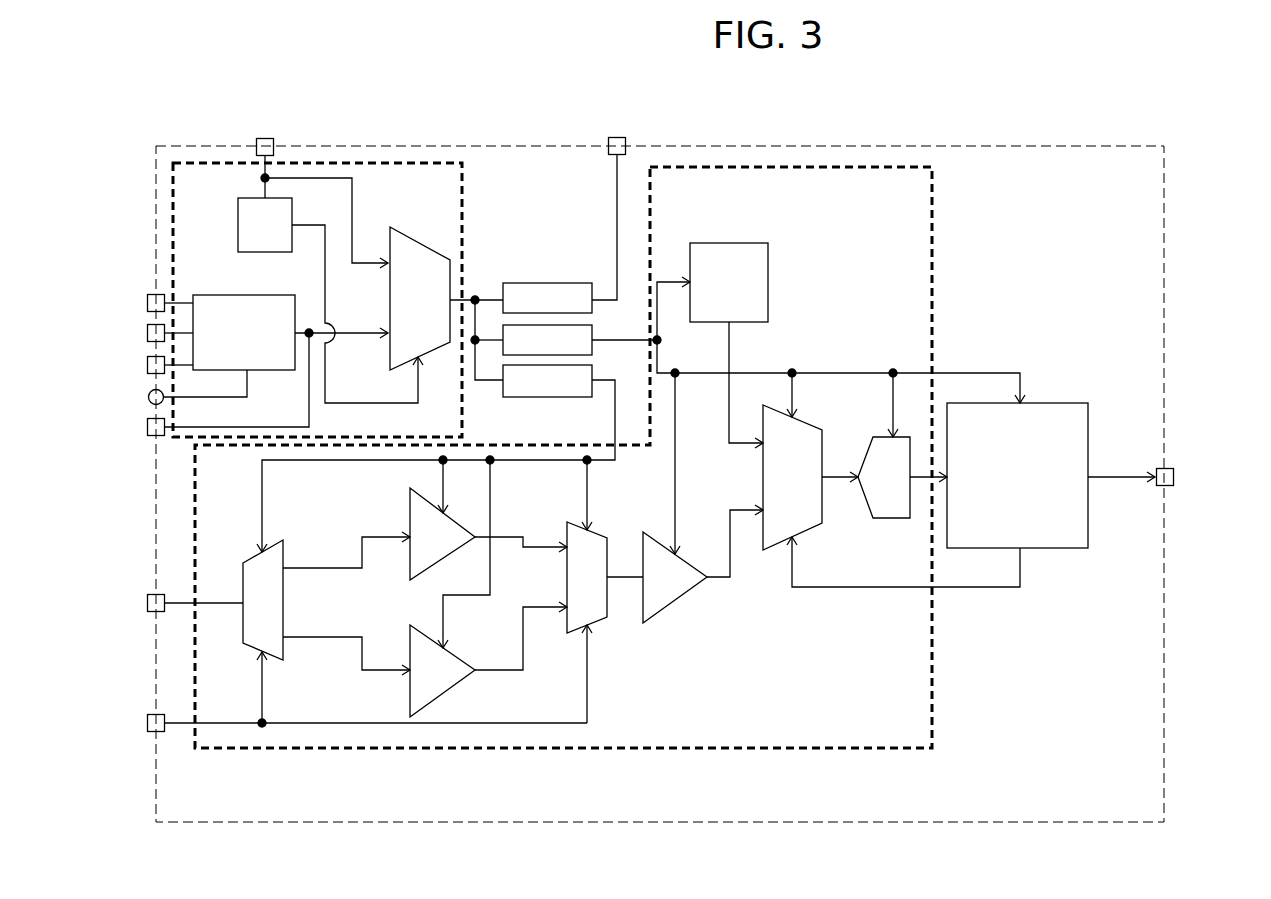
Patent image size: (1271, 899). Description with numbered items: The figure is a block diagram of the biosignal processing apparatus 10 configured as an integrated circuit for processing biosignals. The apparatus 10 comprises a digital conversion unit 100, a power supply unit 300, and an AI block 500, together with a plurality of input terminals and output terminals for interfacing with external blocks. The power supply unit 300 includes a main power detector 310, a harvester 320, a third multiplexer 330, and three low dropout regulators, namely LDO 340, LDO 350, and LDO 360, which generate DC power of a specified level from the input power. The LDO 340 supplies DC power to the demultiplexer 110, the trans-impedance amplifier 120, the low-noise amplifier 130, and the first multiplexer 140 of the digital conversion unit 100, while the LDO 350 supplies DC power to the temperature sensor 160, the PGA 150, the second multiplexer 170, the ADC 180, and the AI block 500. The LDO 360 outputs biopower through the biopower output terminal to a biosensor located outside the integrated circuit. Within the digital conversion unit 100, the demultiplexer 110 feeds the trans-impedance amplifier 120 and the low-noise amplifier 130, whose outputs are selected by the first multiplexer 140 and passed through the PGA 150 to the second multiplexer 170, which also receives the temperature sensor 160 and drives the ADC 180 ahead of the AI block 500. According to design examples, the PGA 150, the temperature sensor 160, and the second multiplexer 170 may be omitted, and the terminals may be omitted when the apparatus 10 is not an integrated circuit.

The biosignal processing apparatus 10 is at (606, 877).
The digital conversion unit 100 is at (932, 292).
The power supply unit 300 is at (462, 197).
The AI block 500 is at (1052, 403).
The demultiplexer 110 is at (283, 540).
The trans-impedance amplifier 120 is at (410, 497).
The low-noise amplifier 130 is at (410, 633).
The first multiplexer 140 is at (607, 532).
The PGA 150 is at (670, 606).
The temperature sensor 160 is at (730, 243).
The second multiplexer 170 is at (808, 424).
The ADC 180 is at (866, 502).
The main power detector 310 is at (238, 222).
The harvester 320 is at (227, 295).
The third multiplexer 330 is at (425, 243).
The LDO 340 is at (545, 397).
The LDO 350 is at (592, 330).
The LDO 360 is at (545, 283).